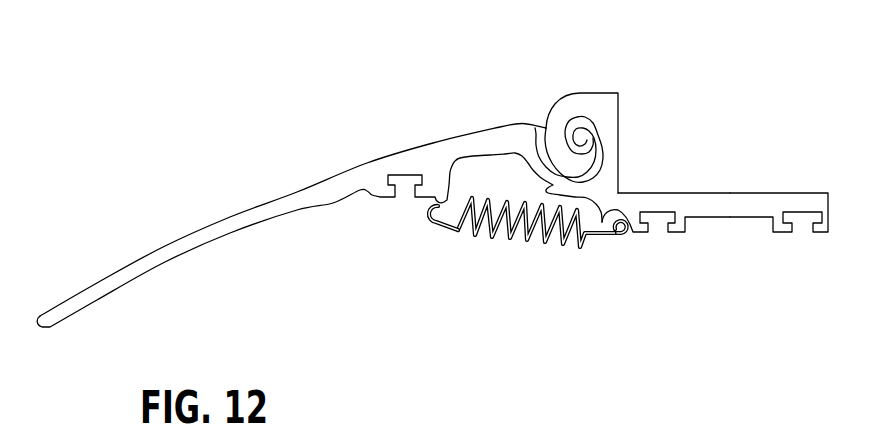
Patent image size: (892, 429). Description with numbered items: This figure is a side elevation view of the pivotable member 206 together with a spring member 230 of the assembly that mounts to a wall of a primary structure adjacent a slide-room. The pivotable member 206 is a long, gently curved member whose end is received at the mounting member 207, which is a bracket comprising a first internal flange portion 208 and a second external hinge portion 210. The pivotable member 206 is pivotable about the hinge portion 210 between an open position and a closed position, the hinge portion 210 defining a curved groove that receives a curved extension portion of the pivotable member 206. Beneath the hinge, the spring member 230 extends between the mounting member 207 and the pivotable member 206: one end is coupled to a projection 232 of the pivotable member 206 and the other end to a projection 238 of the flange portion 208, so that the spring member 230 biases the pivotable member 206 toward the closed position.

The pivotable member 206 is at (233, 213).
The mounting member 207 is at (657, 193).
The first internal flange portion 208 is at (735, 193).
The second external hinge portion 210 is at (588, 92).
The spring member 230 is at (528, 245).
The projection 232 is at (447, 207).
The projection 238 is at (603, 220).